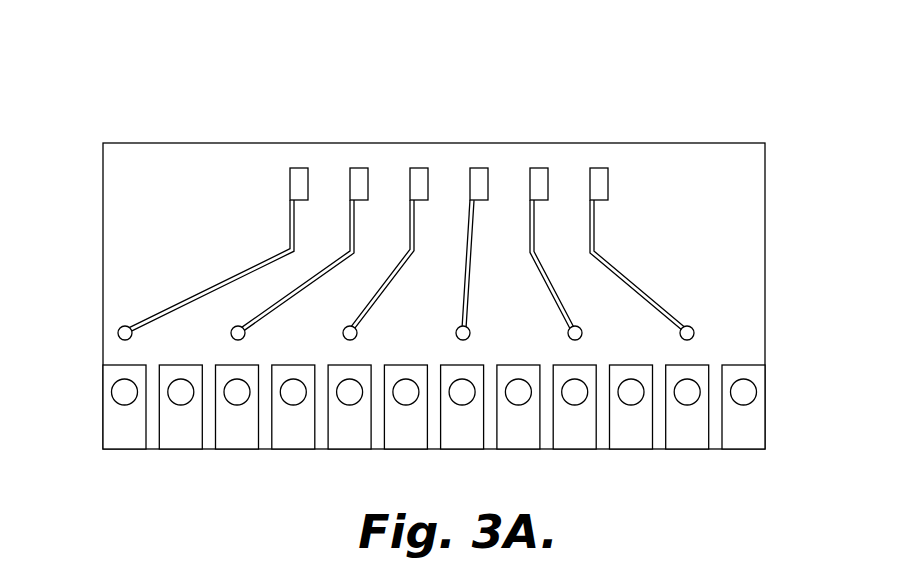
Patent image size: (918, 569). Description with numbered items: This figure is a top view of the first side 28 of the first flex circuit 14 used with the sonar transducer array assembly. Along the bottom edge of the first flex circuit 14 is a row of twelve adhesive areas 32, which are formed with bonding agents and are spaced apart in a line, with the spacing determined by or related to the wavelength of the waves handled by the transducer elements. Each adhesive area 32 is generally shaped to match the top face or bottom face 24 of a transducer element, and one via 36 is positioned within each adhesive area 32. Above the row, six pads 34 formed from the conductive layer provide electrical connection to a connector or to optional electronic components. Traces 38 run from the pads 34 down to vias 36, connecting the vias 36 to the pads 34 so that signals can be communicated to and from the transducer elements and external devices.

The first flex circuit 14 is at (417, 278).
The bottom face 24 is at (455, 6).
The first side 28 is at (160, 162).
The adhesive areas 32 is at (122, 437).
The pads 34 is at (538, 168).
The vias 36 is at (118, 335).
The traces 38 is at (652, 293).